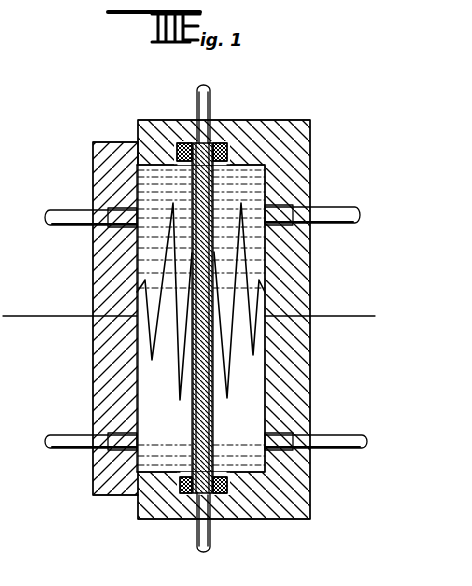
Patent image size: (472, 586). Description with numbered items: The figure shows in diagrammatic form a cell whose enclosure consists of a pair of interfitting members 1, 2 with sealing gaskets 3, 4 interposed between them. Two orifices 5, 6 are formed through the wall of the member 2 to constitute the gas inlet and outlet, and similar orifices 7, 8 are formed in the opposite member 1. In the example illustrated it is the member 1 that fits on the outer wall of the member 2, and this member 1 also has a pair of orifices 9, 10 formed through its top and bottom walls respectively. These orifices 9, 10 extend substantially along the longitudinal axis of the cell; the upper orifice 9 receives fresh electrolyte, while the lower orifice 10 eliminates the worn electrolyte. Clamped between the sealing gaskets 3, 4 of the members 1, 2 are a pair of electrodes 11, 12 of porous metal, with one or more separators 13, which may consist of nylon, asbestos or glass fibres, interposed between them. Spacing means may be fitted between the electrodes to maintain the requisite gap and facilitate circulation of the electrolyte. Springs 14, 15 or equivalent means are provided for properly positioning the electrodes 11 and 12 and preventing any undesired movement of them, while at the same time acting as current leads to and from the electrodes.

The interfitting member 1 is at (304, 497).
The interfitting member 2 is at (118, 496).
The sealing gasket 3 is at (188, 143).
The sealing gasket 4 is at (226, 156).
The orifice 5 is at (70, 210).
The orifice 6 is at (64, 447).
The orifice 7 is at (338, 210).
The orifice 8 is at (352, 449).
The upper orifice 9 is at (210, 97).
The lower orifice 10 is at (197, 541).
The electrode 11 is at (178, 180).
The electrode 12 is at (215, 191).
The separator 13 is at (211, 418).
The spring 14 is at (152, 333).
The spring 15 is at (247, 266).